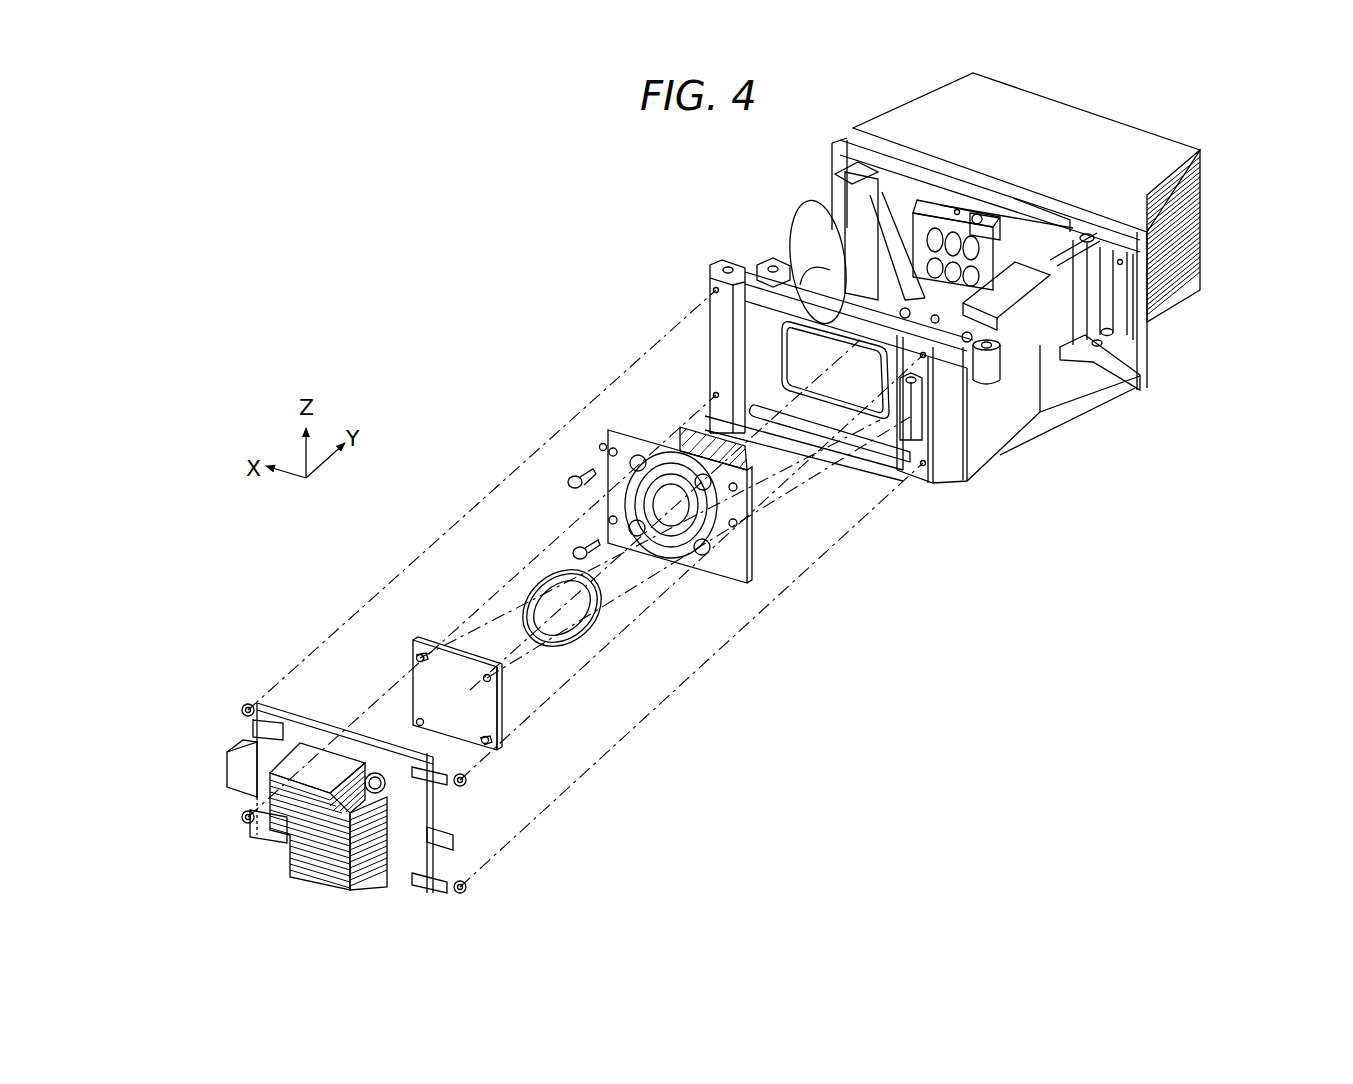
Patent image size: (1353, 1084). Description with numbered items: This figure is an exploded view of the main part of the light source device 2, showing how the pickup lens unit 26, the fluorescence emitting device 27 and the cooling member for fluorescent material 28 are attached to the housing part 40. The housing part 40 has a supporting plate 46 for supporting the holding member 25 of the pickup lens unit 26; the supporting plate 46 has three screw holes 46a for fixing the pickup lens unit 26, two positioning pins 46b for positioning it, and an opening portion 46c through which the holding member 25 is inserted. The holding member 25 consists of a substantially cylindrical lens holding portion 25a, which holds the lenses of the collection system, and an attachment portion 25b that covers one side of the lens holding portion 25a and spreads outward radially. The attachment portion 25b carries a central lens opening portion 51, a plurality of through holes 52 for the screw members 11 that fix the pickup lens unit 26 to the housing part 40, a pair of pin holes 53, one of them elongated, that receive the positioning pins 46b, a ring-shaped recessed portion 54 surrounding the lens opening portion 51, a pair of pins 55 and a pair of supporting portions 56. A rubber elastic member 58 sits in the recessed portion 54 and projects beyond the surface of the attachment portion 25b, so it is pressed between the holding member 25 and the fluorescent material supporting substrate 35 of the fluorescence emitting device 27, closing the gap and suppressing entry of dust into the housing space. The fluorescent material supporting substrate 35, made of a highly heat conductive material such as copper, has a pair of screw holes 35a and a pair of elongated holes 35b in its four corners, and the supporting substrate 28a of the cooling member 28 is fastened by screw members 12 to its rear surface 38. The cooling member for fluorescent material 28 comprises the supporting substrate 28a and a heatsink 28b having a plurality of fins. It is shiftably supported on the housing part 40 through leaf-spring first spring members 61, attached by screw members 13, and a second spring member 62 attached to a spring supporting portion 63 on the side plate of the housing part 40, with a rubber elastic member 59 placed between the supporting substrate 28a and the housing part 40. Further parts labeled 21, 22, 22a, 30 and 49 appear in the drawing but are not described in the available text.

The light source device 2 is at (1245, 152).
The screw members 11 is at (570, 482).
The screw members 12 is at (350, 808).
The screw members 13 is at (245, 706).
The light source device 21 is at (913, 232).
The housing 22 is at (1140, 150).
The heat radiating fins 22a is at (1202, 207).
The holding member 25 is at (648, 418).
The lens holding portion 25a is at (673, 437).
The attachment portion 25b is at (620, 432).
The pickup lens unit 26 is at (755, 583).
The fluorescence emitting device 27 is at (478, 674).
The cooling member for fluorescent material 28 is at (337, 792).
The supporting substrate 28a is at (257, 797).
The heatsink 28b is at (313, 878).
The inner plate 30 is at (1000, 293).
The fluorescent material supporting substrate 35 is at (503, 683).
The screw holes 35a is at (487, 676).
The elongated holes 35b is at (412, 655).
The rear surface 38 is at (500, 703).
The housing part 40 is at (1020, 407).
The supporting plate 46 is at (853, 460).
The screw holes 46a is at (740, 290).
The positioning pins 46b is at (740, 393).
The opening portion 46c is at (805, 285).
The fan 49 is at (826, 240).
The lens opening portion 51 is at (665, 550).
The through holes 52 is at (600, 447).
The pin holes 53 is at (597, 542).
The ring-shaped recessed portion 54 is at (705, 552).
The pins 55 is at (632, 458).
The supporting portions 56 is at (628, 528).
The elastic member 58 is at (600, 615).
The elastic member 59 is at (923, 465).
The first spring members 61 is at (268, 732).
The second spring member 62 is at (452, 845).
The spring supporting portion 63 is at (927, 413).